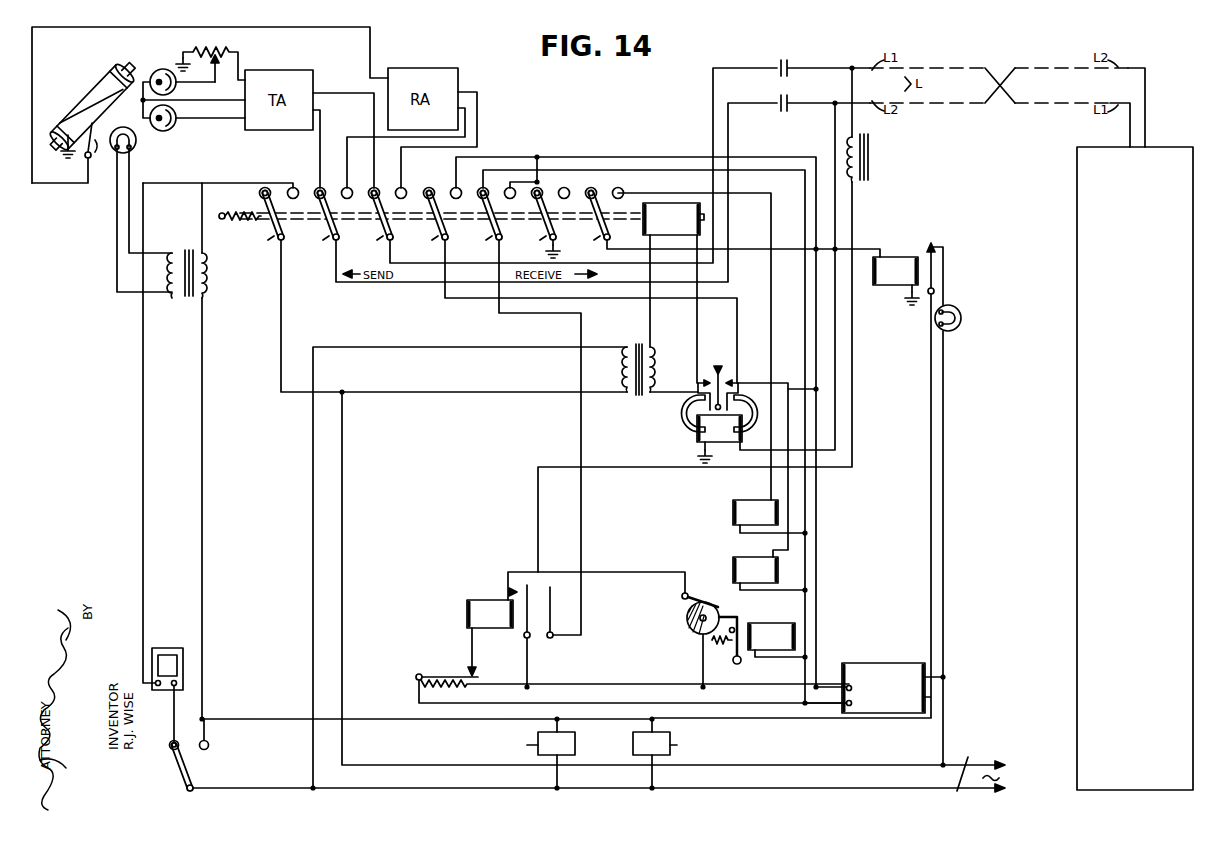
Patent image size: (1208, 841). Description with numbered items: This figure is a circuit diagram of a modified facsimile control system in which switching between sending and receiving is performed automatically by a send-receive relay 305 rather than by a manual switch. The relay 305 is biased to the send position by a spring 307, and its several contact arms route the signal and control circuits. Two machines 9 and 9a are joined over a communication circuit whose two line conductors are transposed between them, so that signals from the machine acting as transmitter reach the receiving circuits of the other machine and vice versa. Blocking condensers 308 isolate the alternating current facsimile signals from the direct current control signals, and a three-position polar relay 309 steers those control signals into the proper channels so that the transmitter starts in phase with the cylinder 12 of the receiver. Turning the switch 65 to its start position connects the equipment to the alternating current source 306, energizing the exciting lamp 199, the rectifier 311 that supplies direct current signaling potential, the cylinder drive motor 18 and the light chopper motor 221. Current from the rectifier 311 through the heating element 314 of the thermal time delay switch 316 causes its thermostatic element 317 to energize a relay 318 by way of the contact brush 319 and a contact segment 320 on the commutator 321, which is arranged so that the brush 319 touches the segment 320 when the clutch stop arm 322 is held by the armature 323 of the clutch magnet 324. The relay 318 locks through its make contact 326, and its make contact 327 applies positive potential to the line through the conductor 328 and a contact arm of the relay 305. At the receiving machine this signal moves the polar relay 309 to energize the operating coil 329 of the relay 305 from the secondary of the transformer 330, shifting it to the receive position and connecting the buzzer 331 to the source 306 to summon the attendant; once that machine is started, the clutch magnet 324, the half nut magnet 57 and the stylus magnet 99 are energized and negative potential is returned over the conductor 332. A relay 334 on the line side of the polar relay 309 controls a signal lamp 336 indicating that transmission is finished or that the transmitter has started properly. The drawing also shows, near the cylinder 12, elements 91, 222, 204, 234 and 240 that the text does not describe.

The cylinder 12 is at (72, 96).
The switch 91 is at (97, 146).
The jack 222 is at (158, 71).
The jack 204 is at (173, 125).
The potentiometer 234 is at (231, 51).
The exciting lamp 199 is at (135, 146).
The transformer 240 is at (188, 296).
The spring 307 is at (248, 225).
The send-receive relay 305 is at (315, 244).
The make contact 326 is at (660, 211).
The blocking condensers 308 is at (780, 102).
The conductor 332 is at (749, 157).
The conductor 328 is at (757, 176).
The relay 334 is at (902, 260).
The signal lamp 336 is at (962, 306).
The transformer 330 is at (636, 346).
The polar relay 309 is at (700, 435).
The stylus magnet 99 is at (738, 514).
The half nut magnet 57 is at (738, 572).
The relay 318 is at (495, 605).
The operating coil 329 is at (516, 586).
The make contact 327 is at (545, 590).
The thermostatic element 317 is at (456, 677).
The thermal current time delay switch 316 is at (414, 667).
The heating element 314 is at (430, 688).
The contact segment 320 is at (703, 604).
The contact brush 319 is at (690, 600).
The commutator 321 is at (688, 632).
The clutch stop arm 322 is at (738, 617).
The armature 323 is at (734, 660).
The clutch magnet 324 is at (780, 640).
The rectifier 311 is at (864, 668).
The cylinder drive motor 18 is at (577, 744).
The light chopper motor 221 is at (633, 752).
The alternating current source 306 is at (966, 760).
The buzzer 331 is at (164, 648).
The switch 65 is at (184, 780).
The machine 9 is at (940, 472).
The machine 9a is at (1071, 463).